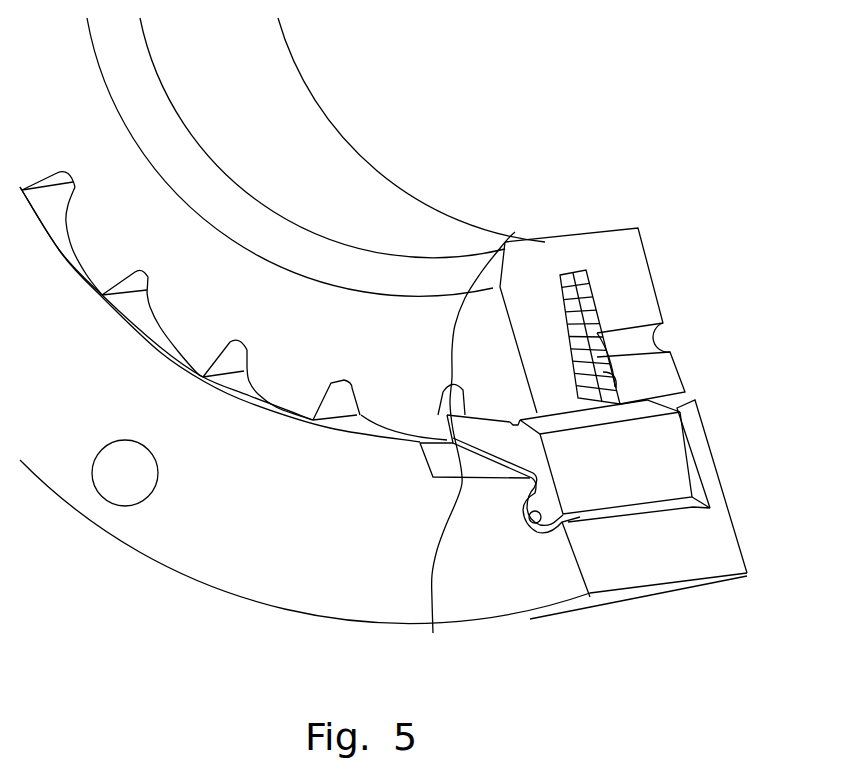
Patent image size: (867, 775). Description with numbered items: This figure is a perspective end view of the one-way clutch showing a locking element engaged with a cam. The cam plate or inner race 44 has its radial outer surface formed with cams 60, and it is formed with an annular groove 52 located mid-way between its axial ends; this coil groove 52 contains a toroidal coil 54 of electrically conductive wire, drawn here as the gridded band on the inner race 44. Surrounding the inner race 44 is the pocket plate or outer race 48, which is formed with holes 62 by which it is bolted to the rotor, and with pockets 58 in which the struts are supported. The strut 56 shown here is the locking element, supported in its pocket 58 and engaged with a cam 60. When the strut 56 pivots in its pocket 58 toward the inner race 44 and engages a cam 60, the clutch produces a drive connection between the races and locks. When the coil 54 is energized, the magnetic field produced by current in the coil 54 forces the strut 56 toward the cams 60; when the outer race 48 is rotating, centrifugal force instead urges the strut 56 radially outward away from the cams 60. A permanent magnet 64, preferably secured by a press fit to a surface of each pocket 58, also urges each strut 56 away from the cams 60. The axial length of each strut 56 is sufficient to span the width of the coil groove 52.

The inner race 44 is at (407, 212).
The outer race 48 is at (147, 540).
The annular groove 52 is at (613, 377).
The toroidal coil 54 is at (572, 290).
The strut 56 is at (527, 459).
The pocket 58 is at (525, 530).
The cam 60 is at (515, 232).
The hole 62 is at (117, 478).
The permanent magnet 64 is at (468, 447).